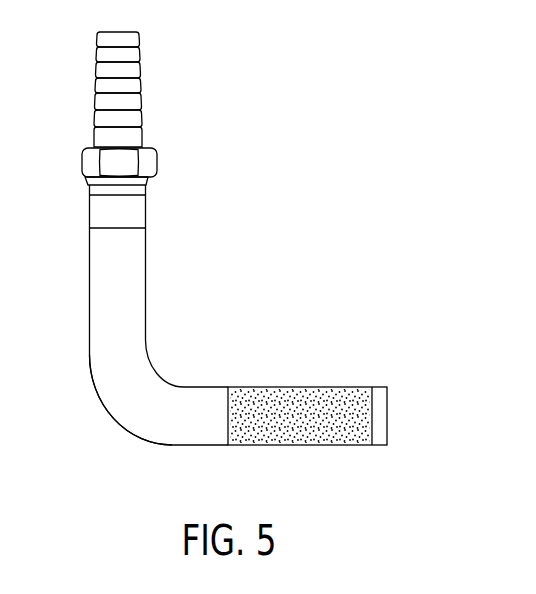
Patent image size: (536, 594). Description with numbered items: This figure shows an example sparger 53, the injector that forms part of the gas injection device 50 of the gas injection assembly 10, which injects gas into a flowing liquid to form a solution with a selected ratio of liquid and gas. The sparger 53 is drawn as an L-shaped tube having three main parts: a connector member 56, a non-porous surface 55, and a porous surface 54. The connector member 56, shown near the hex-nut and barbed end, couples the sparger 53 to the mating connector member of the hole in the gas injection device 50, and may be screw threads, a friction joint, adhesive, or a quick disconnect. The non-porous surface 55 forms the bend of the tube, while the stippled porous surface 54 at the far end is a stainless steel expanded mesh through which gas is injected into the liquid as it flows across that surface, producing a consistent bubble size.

The gas injection assembly 10 is at (268, 177).
The gas injection device 50 is at (328, 242).
The sparger 53 is at (197, 330).
The porous surface 54 is at (303, 422).
The non-porous surface 55 is at (115, 387).
The connector member 56 is at (151, 160).